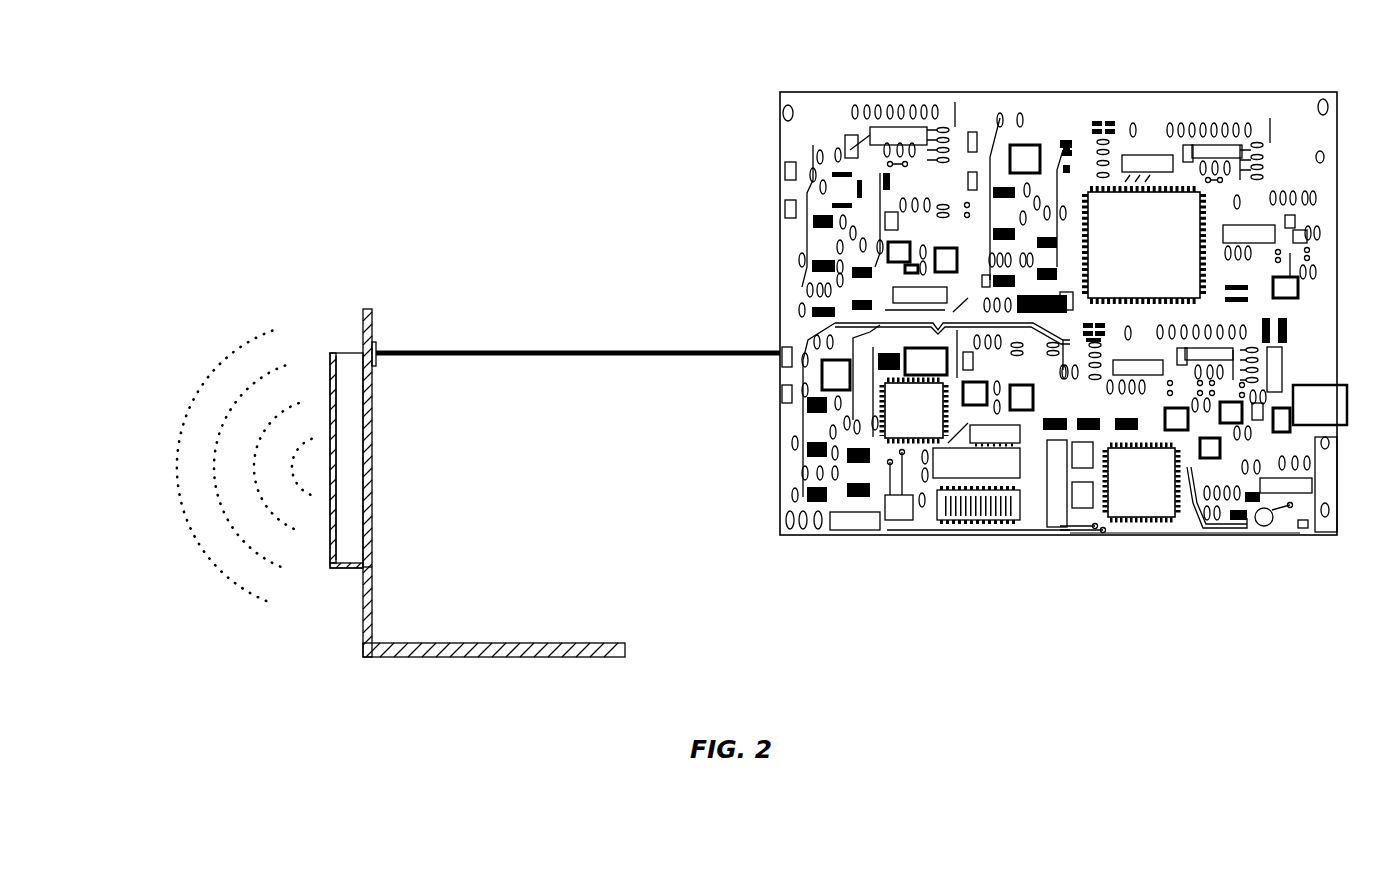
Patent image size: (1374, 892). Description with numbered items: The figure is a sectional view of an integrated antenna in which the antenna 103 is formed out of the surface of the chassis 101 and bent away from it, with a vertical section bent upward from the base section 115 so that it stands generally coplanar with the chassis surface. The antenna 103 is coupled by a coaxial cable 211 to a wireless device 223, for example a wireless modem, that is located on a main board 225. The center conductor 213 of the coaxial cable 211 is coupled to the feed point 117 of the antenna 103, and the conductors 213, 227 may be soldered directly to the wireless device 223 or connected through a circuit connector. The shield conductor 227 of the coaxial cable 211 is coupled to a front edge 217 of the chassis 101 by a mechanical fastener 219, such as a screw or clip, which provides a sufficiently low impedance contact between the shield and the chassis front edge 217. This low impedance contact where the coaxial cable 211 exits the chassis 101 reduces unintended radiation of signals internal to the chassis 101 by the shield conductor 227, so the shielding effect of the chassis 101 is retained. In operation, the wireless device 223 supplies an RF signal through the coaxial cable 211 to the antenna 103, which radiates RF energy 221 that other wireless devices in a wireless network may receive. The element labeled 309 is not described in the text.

The chassis 101 is at (514, 464).
The antenna 103 is at (322, 430).
The base section 115 is at (363, 569).
The feed point 117 is at (333, 367).
The coaxial cable 211 is at (578, 294).
The center conductor 213 is at (237, 456).
The front edge 217 is at (370, 335).
The mechanical fastener 219 is at (377, 358).
The RF energy 221 is at (176, 519).
The wireless device 223 is at (1150, 551).
The main board 225 is at (1046, 76).
The shield conductor 227 is at (598, 350).
The housing bracket joint 309 is at (364, 576).